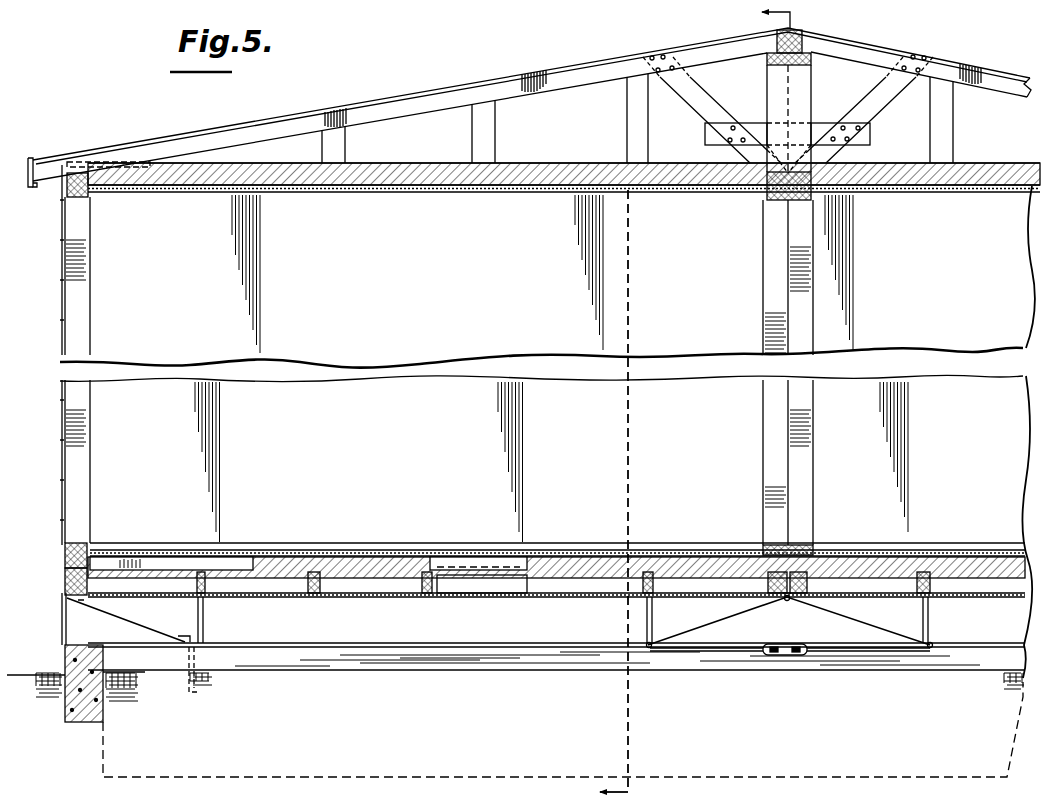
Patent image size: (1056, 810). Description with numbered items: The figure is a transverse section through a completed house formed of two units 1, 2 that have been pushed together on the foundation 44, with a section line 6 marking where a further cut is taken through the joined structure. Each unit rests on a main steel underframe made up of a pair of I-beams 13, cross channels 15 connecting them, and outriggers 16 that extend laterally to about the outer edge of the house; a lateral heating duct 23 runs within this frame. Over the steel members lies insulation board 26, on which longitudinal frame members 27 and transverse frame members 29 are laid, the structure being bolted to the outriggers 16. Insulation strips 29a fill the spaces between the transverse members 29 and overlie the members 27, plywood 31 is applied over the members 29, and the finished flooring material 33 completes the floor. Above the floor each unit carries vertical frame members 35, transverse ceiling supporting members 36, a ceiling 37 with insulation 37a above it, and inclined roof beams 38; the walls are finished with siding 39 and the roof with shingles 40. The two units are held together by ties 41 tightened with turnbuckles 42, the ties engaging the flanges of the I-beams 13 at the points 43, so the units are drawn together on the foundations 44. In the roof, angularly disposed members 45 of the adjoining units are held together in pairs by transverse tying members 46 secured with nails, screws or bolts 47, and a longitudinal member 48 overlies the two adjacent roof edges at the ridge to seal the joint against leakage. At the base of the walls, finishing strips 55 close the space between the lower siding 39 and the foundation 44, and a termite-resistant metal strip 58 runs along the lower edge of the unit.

The first building section 1 is at (54, 378).
The second building section 2 is at (1006, 369).
The section line 6- 6 is at (707, 404).
The I-beam 13 is at (204, 616).
The cross channel 15 is at (340, 628).
The outrigger 16 is at (134, 618).
The lateral duct 23 is at (470, 584).
The insulation board 26 is at (275, 590).
The longitudinal frame member 27 is at (317, 572).
The transverse frame member 29 is at (180, 555).
The insulation strip 29a is at (380, 567).
The plywood 31 is at (697, 522).
The flooring material 33 is at (583, 520).
The vertical frame member 35 is at (82, 299).
The transverse ceiling supporting member 36 is at (584, 145).
The ceiling 37 is at (465, 187).
The insulation 37a is at (384, 170).
The roof beam 38 is at (568, 75).
The siding 39 is at (63, 453).
The shingles 40 is at (109, 147).
The tie 41 is at (738, 652).
The turnbuckle 42 is at (808, 623).
The tie engagement point 43 is at (648, 647).
The foundation 44 is at (65, 658).
The angularly disposed member 45 is at (696, 101).
The transverse tying member 46 is at (824, 124).
The nails, screws or bolts 47 is at (722, 128).
The longitudinal member 48 is at (786, 28).
The finishing strip 55 is at (62, 612).
The termite-resistant metal strip 58 is at (785, 601).